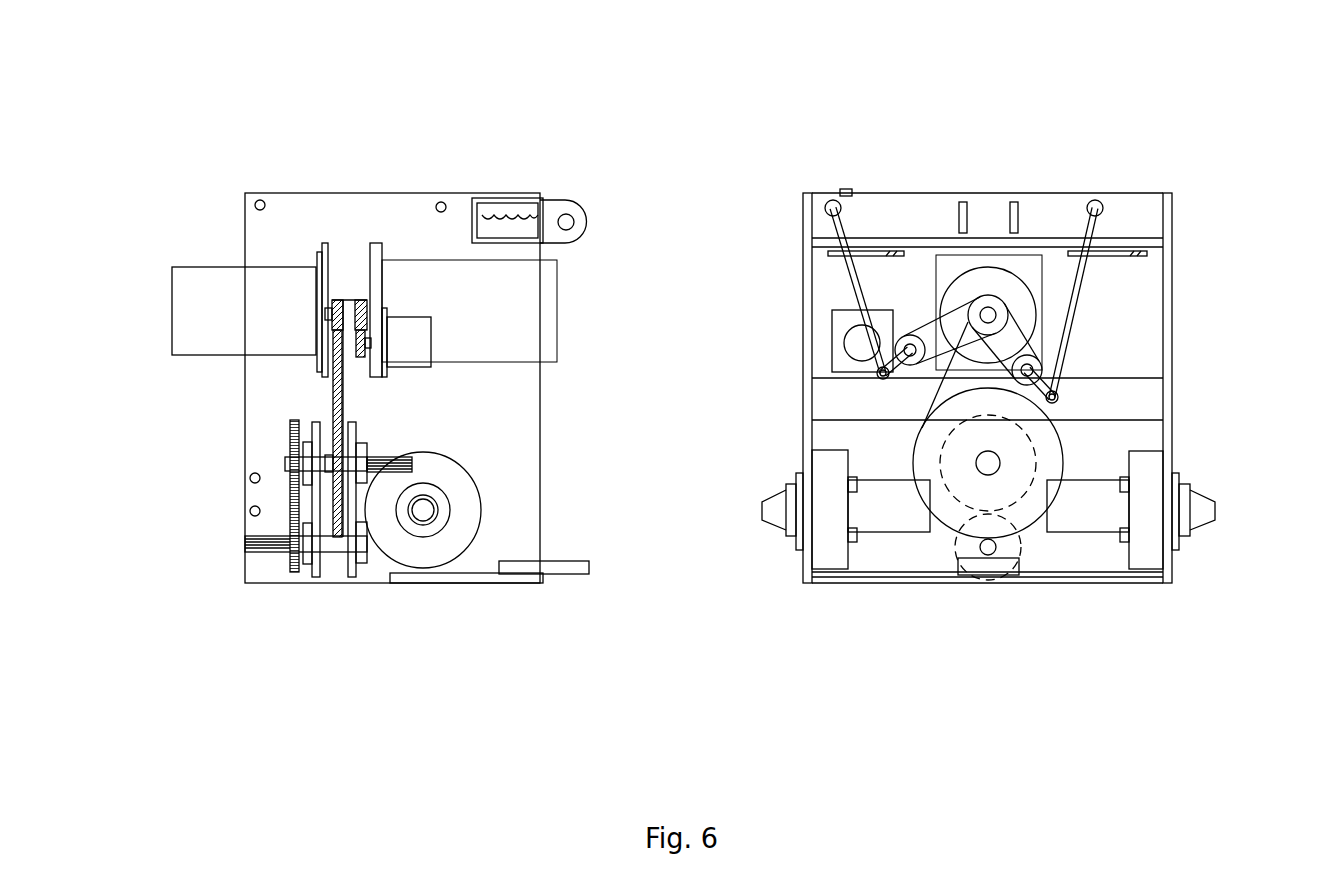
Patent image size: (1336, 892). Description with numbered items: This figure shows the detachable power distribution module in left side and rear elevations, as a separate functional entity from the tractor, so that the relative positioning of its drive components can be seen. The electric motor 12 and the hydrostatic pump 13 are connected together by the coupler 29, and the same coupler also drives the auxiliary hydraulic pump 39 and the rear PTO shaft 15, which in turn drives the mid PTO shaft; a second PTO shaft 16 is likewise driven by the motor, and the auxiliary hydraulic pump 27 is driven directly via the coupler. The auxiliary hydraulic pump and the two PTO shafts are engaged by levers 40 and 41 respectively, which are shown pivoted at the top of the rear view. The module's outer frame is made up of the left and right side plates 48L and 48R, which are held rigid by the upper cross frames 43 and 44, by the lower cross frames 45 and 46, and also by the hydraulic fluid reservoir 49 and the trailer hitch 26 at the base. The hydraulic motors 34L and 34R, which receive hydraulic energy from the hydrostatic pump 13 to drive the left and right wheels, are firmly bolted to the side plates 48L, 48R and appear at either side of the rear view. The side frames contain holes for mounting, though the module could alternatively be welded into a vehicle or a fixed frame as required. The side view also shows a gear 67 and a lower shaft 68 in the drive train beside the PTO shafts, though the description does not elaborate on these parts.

The electric motor 12 is at (218, 283).
The hydrostatic pump 13 is at (500, 318).
The rear PTO shaft 15 is at (380, 455).
The PTO shaft 16 is at (257, 545).
The trailer hitch 26 is at (523, 567).
The auxiliary hydraulic pump 27 is at (415, 334).
The coupler 29 is at (350, 305).
The left hydraulic motor 34L is at (837, 515).
The right hydraulic motor 34R is at (1150, 519).
The auxiliary hydraulic pump 39 is at (842, 323).
The lever 40 is at (840, 222).
The lever 41 is at (1097, 224).
The upper cross frame 43 is at (373, 252).
The upper cross frame 44 is at (330, 252).
The lower cross frame 45 is at (317, 572).
The lower cross frame 46 is at (349, 572).
The left side plate 48L is at (807, 242).
The right side plate 48R is at (1171, 266).
The hydraulic fluid reservoir 49 is at (508, 208).
The gear 67 is at (295, 433).
The lower shaft 68 is at (287, 563).